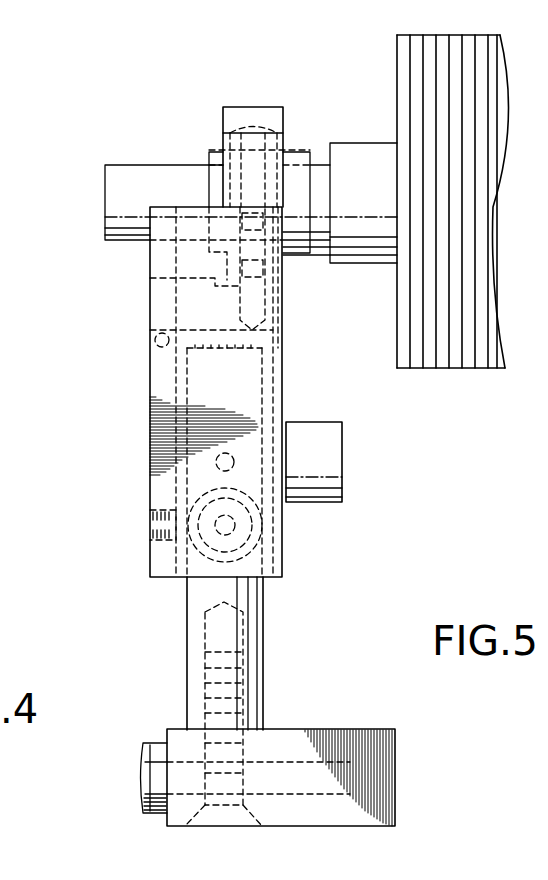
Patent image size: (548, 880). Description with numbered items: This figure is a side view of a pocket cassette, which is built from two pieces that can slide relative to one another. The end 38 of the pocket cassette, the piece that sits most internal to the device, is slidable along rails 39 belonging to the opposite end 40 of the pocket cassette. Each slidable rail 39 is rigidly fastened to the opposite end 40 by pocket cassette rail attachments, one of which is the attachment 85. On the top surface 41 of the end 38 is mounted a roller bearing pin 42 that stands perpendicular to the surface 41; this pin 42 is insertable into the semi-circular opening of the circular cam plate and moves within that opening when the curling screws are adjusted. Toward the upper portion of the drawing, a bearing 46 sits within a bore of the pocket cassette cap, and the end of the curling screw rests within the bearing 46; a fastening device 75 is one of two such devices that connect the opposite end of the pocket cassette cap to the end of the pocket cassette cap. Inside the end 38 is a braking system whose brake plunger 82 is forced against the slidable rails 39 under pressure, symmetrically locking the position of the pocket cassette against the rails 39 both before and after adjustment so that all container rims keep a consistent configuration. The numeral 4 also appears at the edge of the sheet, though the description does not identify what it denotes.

The drive shaft 4 is at (105, 197).
The bearing 46 is at (210, 170).
The end of the pocket cassette 38 is at (160, 253).
The fastening device 75 is at (258, 303).
The top surface 41 is at (150, 400).
The roller bearing pin 42 is at (310, 462).
The brake plunger 82 is at (232, 528).
The rail 39 is at (197, 595).
The pocket cassette rail attachment 85 is at (232, 632).
The opposite end of the pocket cassette 40 is at (355, 748).